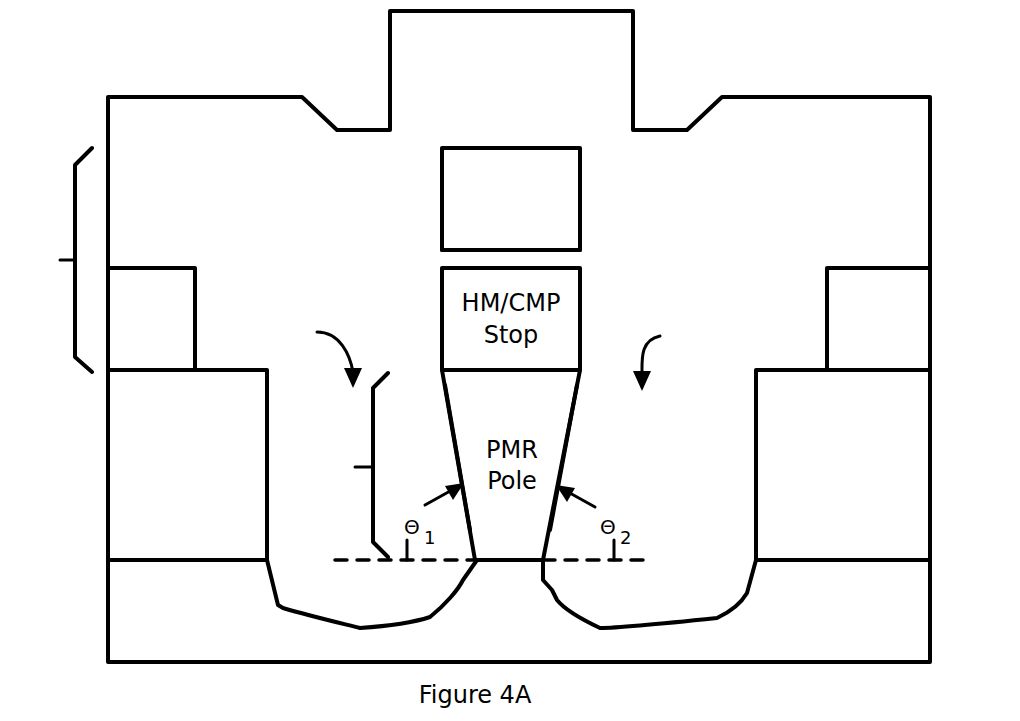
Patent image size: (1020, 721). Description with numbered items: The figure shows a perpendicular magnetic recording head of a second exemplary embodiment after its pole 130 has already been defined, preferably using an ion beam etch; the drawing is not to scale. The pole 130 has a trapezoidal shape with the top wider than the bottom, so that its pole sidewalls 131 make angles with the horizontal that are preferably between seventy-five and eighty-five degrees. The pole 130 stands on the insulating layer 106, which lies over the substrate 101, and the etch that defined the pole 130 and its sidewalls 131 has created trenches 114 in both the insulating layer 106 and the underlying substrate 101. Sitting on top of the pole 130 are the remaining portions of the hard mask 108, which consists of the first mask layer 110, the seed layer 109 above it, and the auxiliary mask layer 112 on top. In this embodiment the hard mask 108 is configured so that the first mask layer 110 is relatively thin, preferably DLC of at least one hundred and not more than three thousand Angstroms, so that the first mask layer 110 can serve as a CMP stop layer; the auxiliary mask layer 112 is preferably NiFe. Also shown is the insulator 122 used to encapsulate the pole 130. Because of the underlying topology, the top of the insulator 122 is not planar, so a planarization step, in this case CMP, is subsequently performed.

The substrate 101 is at (108, 627).
The insulating layer 106 is at (108, 525).
The hard mask 108 is at (59, 260).
The seed layer 109 is at (580, 252).
The first mask layer 110 is at (160, 268).
The auxiliary mask layer 112 is at (442, 190).
The trenches 114 is at (490, 356).
The insulator 122 is at (108, 125).
The pole 130 is at (355, 465).
The pole sidewall 131 is at (458, 464).